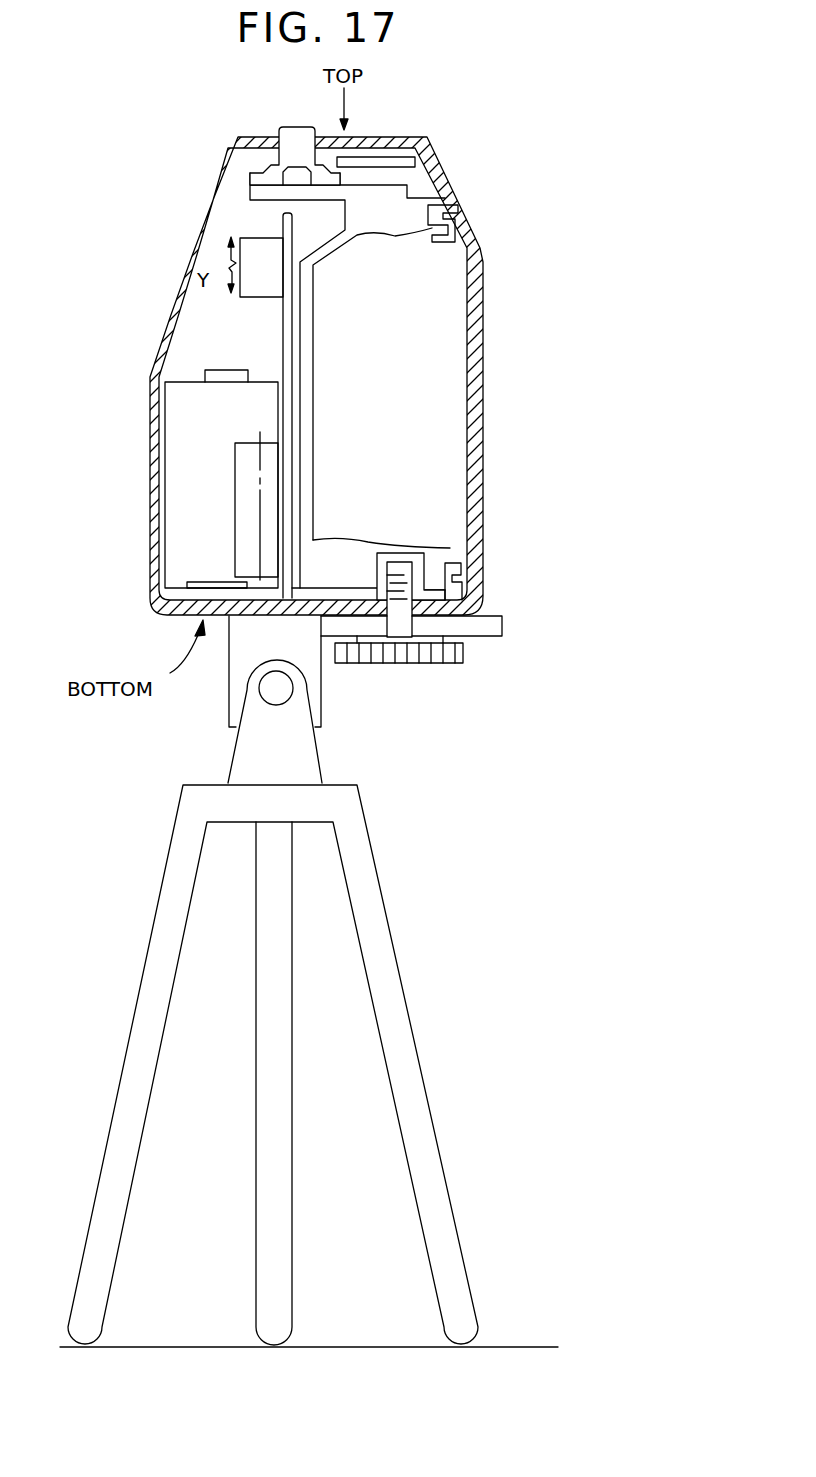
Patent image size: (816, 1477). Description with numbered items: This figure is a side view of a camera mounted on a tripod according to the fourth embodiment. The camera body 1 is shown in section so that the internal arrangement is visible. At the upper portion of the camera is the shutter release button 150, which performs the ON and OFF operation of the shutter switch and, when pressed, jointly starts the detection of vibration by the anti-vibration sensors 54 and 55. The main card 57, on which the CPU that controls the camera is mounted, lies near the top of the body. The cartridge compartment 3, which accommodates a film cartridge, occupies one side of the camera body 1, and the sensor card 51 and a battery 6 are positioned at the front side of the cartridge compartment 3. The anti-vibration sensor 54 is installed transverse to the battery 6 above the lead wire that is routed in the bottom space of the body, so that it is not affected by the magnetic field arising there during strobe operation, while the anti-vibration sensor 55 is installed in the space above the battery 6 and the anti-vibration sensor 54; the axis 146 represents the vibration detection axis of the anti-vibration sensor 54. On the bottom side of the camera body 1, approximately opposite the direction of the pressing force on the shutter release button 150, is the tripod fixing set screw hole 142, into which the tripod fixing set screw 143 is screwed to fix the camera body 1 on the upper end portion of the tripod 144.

The camera body 1 is at (386, 135).
The cartridge compartment 3 is at (432, 289).
The battery 6 is at (185, 470).
The sensor card 51 is at (283, 217).
The anti-vibration sensor 54 is at (243, 552).
The anti-vibration sensor 55 is at (262, 298).
The main card 57 is at (415, 163).
The tripod fixing set screw hole 142 is at (399, 565).
The tripod fixing set screw 143 is at (440, 667).
The tripod 144 is at (369, 846).
The vibration detection axis 146 is at (257, 483).
The shutter release button 150 is at (285, 136).